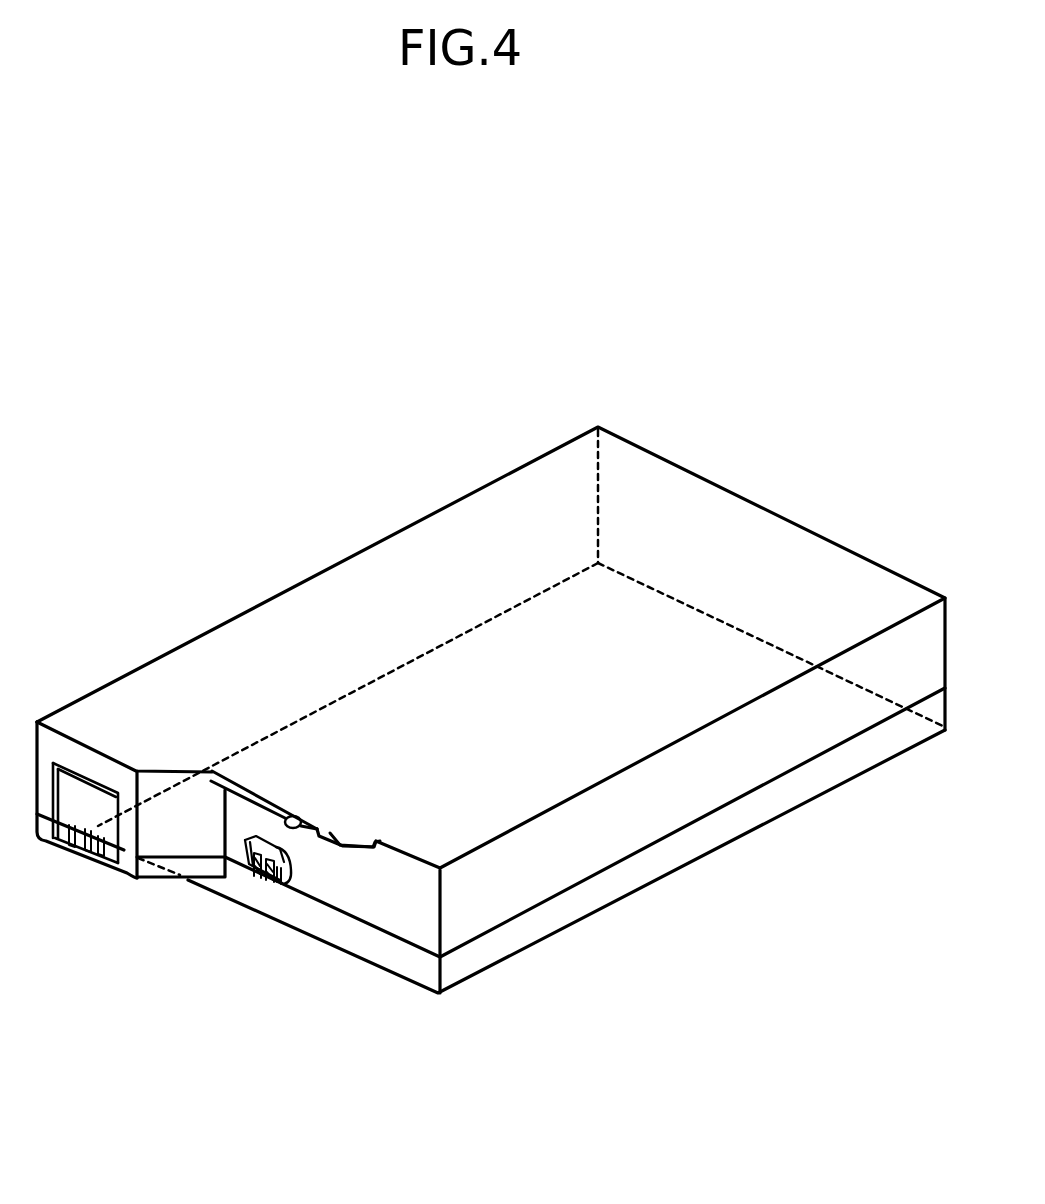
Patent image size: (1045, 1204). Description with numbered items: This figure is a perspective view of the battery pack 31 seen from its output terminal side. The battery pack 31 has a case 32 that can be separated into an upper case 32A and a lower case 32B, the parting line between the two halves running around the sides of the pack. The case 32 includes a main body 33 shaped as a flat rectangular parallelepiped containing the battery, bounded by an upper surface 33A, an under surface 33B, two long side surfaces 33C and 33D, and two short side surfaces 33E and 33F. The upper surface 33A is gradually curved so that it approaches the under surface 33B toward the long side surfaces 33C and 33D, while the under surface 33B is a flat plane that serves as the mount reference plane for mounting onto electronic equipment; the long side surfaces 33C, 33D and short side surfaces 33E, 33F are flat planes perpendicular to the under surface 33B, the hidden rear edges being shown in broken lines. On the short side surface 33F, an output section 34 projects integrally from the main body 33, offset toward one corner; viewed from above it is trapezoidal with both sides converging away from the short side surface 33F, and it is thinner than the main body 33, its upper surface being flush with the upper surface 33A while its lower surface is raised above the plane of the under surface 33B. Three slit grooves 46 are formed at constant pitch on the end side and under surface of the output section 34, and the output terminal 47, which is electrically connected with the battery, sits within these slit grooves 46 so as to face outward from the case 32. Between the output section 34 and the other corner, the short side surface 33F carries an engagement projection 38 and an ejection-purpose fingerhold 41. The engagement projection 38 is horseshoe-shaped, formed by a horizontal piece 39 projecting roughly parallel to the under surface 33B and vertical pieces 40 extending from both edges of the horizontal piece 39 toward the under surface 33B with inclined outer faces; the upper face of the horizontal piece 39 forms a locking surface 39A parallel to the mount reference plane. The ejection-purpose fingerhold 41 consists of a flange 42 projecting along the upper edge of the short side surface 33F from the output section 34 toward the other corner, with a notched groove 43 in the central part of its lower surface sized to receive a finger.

The battery pack 31 is at (197, 485).
The case 32 is at (491, 713).
The upper case 32A is at (630, 838).
The lower case 32B is at (560, 917).
The main body 33 is at (342, 590).
The upper surface 33A is at (437, 537).
The under surface 33B is at (697, 653).
The long side surface 33C is at (838, 730).
The long side surface 33D is at (542, 490).
The short side surface 33E is at (697, 497).
The short side surface 33F is at (400, 925).
The output section 34 is at (92, 703).
The engagement projection 38 is at (279, 929).
The horizontal piece 39 is at (268, 870).
The locking surface 39A is at (280, 850).
The vertical pieces 40 is at (257, 868).
The ejection-purpose fingerhold 41 is at (265, 796).
The flange 42 is at (352, 842).
The groove 43 is at (304, 814).
The slit grooves 46 is at (98, 875).
The output terminal 47 is at (70, 843).